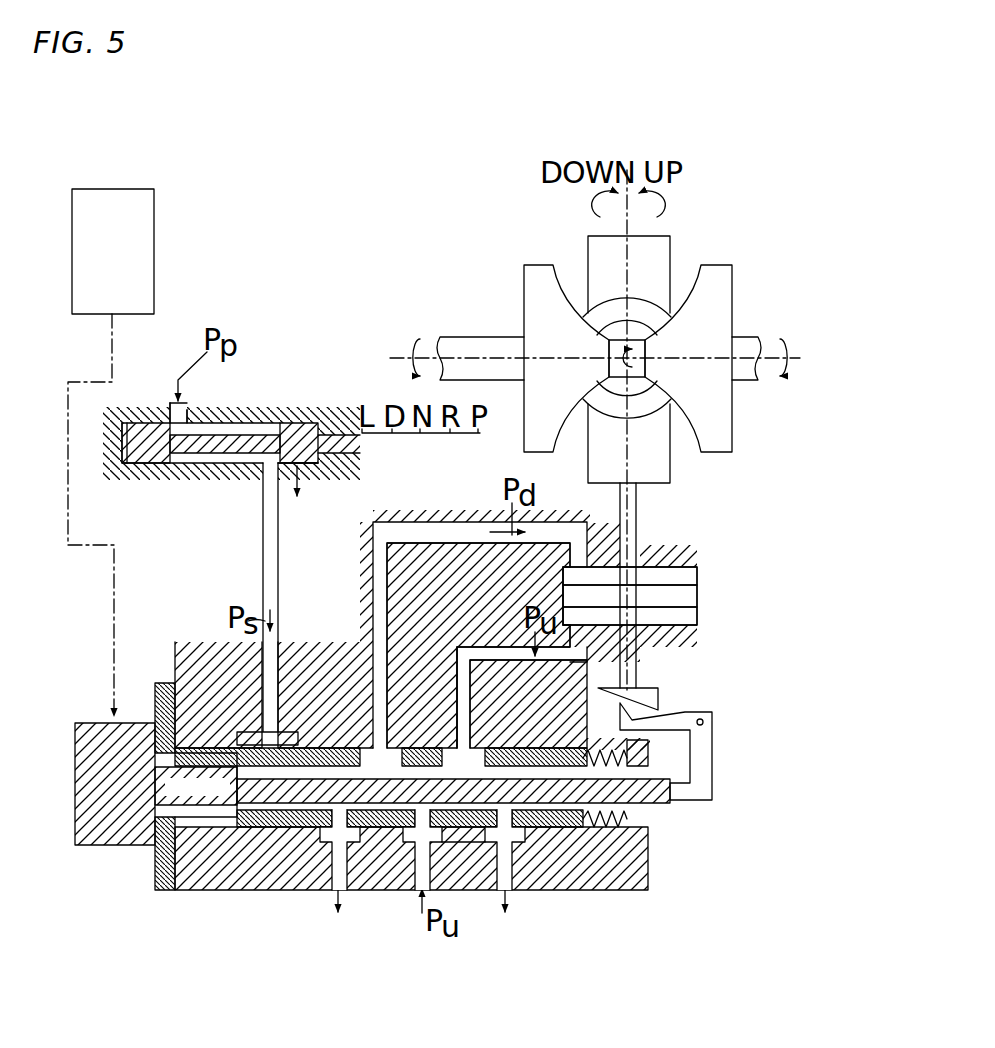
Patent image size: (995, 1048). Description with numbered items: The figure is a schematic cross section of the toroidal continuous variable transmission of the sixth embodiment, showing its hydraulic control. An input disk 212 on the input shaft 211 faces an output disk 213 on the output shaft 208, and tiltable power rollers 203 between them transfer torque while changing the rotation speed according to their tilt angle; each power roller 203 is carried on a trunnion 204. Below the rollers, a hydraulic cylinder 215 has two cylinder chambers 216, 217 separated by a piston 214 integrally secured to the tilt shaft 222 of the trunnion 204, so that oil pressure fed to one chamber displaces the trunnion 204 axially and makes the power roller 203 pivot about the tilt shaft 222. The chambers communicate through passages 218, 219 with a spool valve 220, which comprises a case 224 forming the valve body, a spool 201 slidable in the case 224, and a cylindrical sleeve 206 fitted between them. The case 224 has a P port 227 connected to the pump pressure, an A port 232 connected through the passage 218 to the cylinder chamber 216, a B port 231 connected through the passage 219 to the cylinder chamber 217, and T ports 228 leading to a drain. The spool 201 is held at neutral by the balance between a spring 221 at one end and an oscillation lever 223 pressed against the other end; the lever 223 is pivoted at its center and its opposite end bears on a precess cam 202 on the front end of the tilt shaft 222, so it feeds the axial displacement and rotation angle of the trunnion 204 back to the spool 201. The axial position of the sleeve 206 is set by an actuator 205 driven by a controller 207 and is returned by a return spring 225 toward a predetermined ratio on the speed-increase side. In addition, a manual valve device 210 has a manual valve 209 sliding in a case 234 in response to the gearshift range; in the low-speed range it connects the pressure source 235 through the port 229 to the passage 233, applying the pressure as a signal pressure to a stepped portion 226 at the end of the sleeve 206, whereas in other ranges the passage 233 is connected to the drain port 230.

The spool 201 is at (650, 797).
The precess cam 202 is at (660, 696).
The power rollers 203 is at (600, 320).
The trunnions 204 is at (660, 272).
The actuator 205 is at (102, 758).
The sleeve 206 is at (318, 743).
The controller 207 is at (140, 248).
The output shaft 208 is at (462, 347).
The manual valve 209 is at (143, 458).
The manual valve device 210 is at (240, 406).
The input shaft 211 is at (748, 343).
The input disk 212 is at (720, 293).
The output disk 213 is at (535, 303).
The piston 214 is at (685, 594).
The hydraulic cylinder 215 is at (705, 569).
The cylinder chamber 216 is at (687, 624).
The cylinder chamber 217 is at (667, 577).
The passage 218 is at (503, 655).
The passage 219 is at (440, 533).
The spool valve 220 is at (612, 832).
The spring 221 is at (235, 845).
The tilt shaft 222 is at (637, 511).
The oscillation lever 223 is at (713, 762).
The case 224 is at (462, 860).
The return spring 225 is at (630, 832).
The stepped portion 226 is at (272, 665).
The P port 227 is at (386, 822).
The T ports 228 is at (330, 840).
The port 229 is at (188, 416).
The drain port 230 is at (311, 474).
The B port 231 is at (380, 748).
The A port 232 is at (460, 757).
The passage 233 is at (262, 594).
The case 234 is at (300, 420).
The pressure source 235 is at (173, 374).